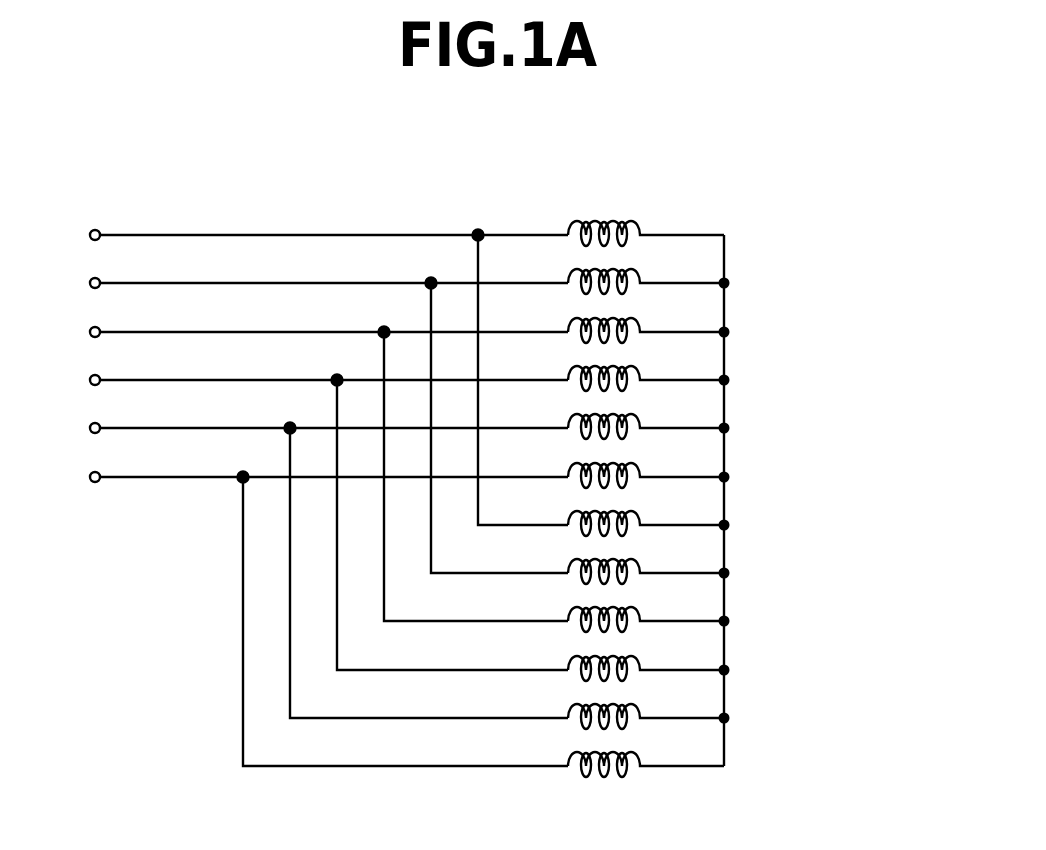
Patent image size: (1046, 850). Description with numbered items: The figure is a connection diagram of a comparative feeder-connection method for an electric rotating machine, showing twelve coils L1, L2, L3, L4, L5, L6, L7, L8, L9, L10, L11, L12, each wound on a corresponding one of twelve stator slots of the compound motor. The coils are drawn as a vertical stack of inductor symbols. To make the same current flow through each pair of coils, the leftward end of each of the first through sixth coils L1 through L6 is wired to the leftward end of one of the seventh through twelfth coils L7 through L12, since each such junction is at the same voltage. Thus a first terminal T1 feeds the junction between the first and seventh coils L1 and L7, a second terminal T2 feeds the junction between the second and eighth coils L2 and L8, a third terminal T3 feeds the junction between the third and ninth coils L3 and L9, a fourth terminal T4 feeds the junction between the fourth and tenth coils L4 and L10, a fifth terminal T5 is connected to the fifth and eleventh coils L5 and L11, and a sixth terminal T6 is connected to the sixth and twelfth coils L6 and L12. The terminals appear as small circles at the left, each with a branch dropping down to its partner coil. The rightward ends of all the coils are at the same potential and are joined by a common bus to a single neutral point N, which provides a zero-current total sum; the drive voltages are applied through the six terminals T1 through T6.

The first terminal T1 is at (311, 374).
The second terminal T2 is at (311, 422).
The third terminal T3 is at (311, 470).
The fourth terminal T4 is at (311, 519).
The fifth terminal T5 is at (311, 567).
The sixth terminal T6 is at (311, 615).
The first coil L1 is at (646, 226).
The second coil L2 is at (646, 274).
The third coil L3 is at (646, 323).
The fourth coil L4 is at (646, 371).
The fifth coil L5 is at (646, 419).
The sixth coil L6 is at (646, 468).
The seventh coil L7 is at (646, 516).
The eighth coil L8 is at (646, 564).
The ninth coil L9 is at (646, 612).
The tenth coil L10 is at (646, 661).
The eleventh coil L11 is at (646, 709).
The twelfth coil L12 is at (646, 757).
The neutral point N is at (738, 479).